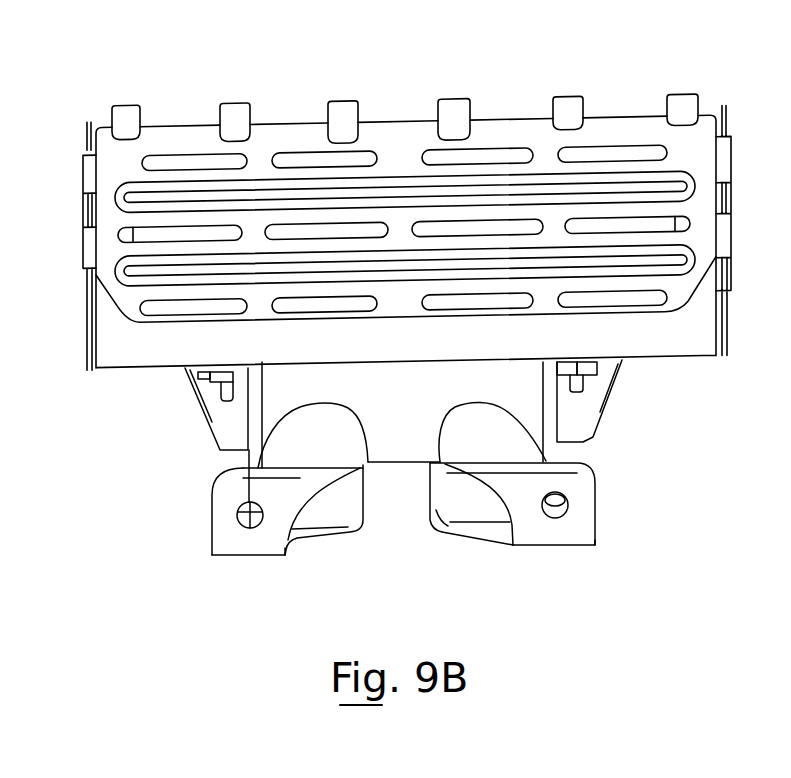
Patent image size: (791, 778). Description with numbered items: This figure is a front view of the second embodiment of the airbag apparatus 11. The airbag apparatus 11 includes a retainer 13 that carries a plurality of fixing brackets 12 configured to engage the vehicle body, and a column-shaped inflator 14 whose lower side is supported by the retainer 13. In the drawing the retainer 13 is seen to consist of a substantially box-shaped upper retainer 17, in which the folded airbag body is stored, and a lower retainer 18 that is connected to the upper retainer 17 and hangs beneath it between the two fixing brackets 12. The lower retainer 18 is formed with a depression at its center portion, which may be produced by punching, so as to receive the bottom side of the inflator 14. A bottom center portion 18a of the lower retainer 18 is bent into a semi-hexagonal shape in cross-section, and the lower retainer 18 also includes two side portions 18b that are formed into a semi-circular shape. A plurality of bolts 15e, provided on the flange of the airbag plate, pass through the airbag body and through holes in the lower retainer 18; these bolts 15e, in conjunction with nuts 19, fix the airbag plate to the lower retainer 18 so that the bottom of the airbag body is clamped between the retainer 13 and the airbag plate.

The airbag apparatus 11 is at (621, 88).
The fixing bracket 12 is at (267, 542).
The retainer 13 is at (622, 467).
The inflator 14 is at (232, 435).
The bolt 15e is at (226, 398).
The upper retainer 17 is at (693, 330).
The lower retainer 18 is at (403, 438).
The bottom center portion 18a is at (250, 515).
The side portion 18b is at (213, 440).
The nut 19 is at (192, 375).